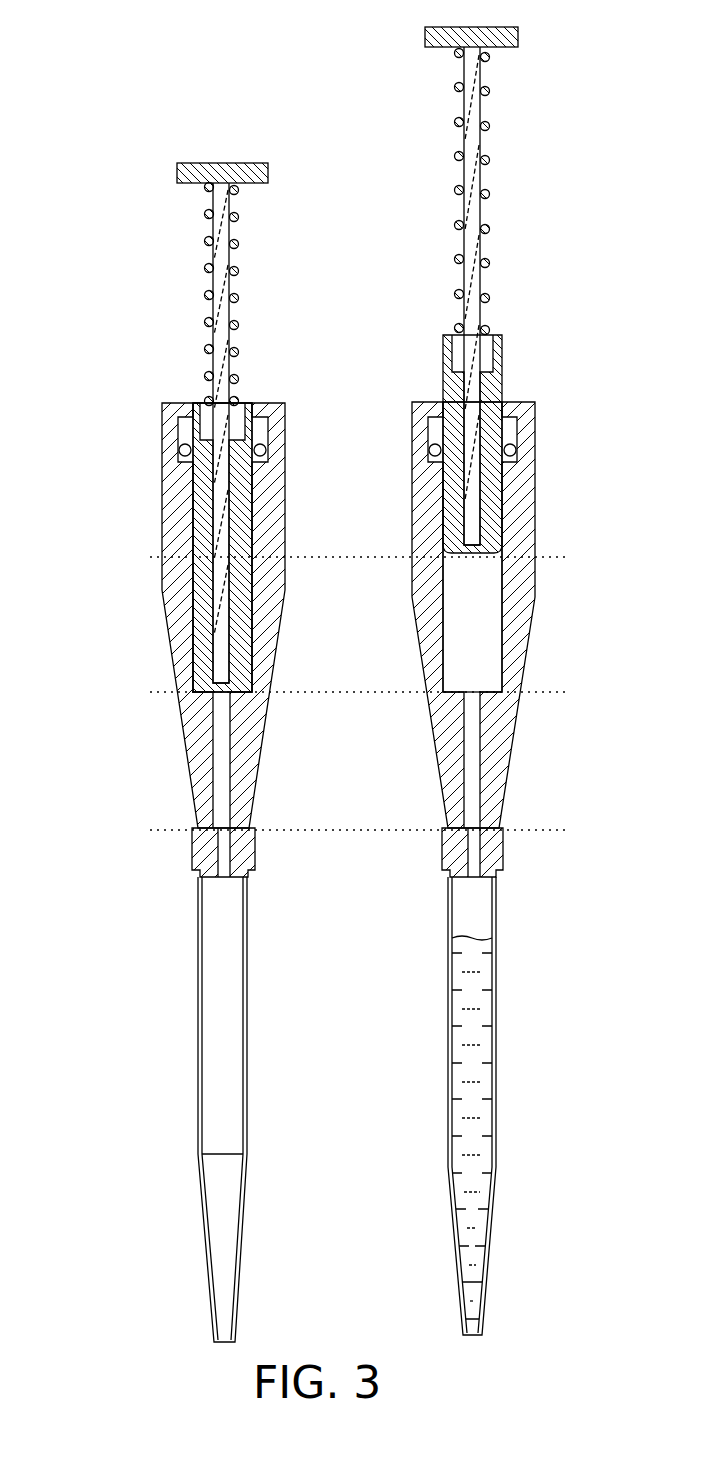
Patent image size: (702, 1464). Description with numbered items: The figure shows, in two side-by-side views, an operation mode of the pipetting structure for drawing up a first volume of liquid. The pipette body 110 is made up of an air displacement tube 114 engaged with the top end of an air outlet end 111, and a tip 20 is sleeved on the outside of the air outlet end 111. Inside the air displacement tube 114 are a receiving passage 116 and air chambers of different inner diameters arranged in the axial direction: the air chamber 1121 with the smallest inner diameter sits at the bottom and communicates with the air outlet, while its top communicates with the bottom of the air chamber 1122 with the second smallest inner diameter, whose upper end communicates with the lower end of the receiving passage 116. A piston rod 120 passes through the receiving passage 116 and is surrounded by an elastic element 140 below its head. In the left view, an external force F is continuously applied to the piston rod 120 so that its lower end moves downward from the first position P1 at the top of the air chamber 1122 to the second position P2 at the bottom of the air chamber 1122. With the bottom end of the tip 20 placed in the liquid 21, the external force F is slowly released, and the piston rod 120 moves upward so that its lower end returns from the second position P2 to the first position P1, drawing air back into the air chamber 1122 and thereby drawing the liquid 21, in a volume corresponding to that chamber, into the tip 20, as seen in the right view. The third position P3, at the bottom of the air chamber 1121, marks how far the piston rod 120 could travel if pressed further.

The pipette body 110 is at (278, 606).
The air outlet end 111 is at (295, 852).
The air displacement tube 114 is at (195, 498).
The receiving passage 116 is at (183, 458).
The piston rod 120 is at (211, 345).
The elastic element 140 is at (207, 295).
The air chamber with smallest inner diameter 1121 is at (212, 768).
The air chamber with second smallest inner diameter 1122 is at (196, 674).
The tip 20 is at (197, 978).
The liquid 21 is at (477, 1103).
The external force F is at (222, 148).
The first position P1 is at (375, 558).
The second position P2 is at (375, 694).
The third position P3 is at (375, 832).